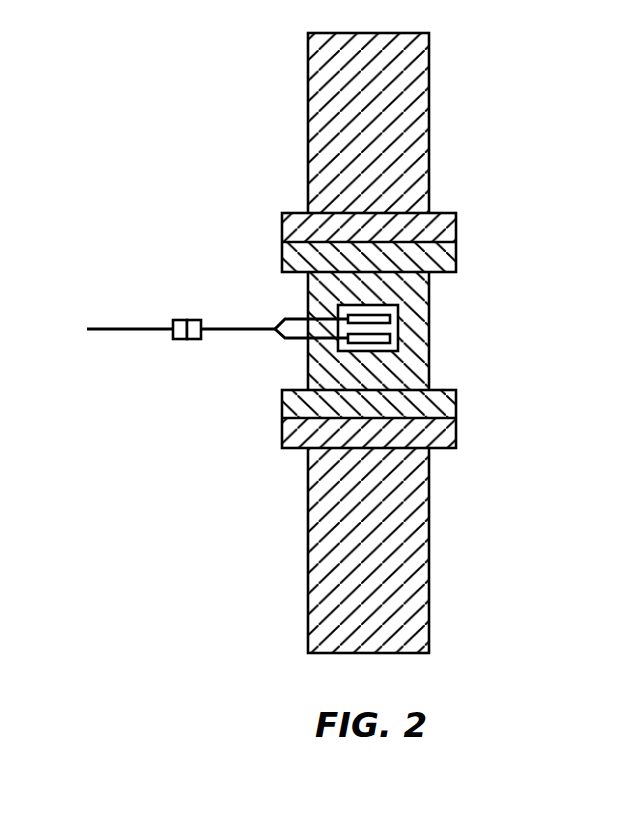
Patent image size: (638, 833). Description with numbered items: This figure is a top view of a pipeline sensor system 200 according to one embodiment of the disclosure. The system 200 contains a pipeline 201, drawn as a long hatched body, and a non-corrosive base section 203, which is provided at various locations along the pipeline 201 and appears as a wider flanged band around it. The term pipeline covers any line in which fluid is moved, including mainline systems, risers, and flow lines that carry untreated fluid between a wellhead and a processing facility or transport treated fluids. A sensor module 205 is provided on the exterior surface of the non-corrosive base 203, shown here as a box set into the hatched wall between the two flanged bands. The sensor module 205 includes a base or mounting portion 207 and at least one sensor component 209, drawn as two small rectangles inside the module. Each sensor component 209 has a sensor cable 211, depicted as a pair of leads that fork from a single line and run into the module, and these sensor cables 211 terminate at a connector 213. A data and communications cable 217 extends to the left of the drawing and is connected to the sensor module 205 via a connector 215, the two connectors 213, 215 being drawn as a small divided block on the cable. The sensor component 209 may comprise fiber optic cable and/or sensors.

The pipeline sensor system 200 is at (308, 343).
The pipeline 201 is at (429, 138).
The non-corrosive base section 203 is at (456, 403).
The sensor module 205 is at (387, 298).
The base or mounting portion 207 is at (398, 322).
The sensor component 209 is at (390, 338).
The sensor cable 211 is at (285, 318).
The connector 213 is at (192, 339).
The connector 215 is at (182, 320).
The data and communications cable 217 is at (145, 329).